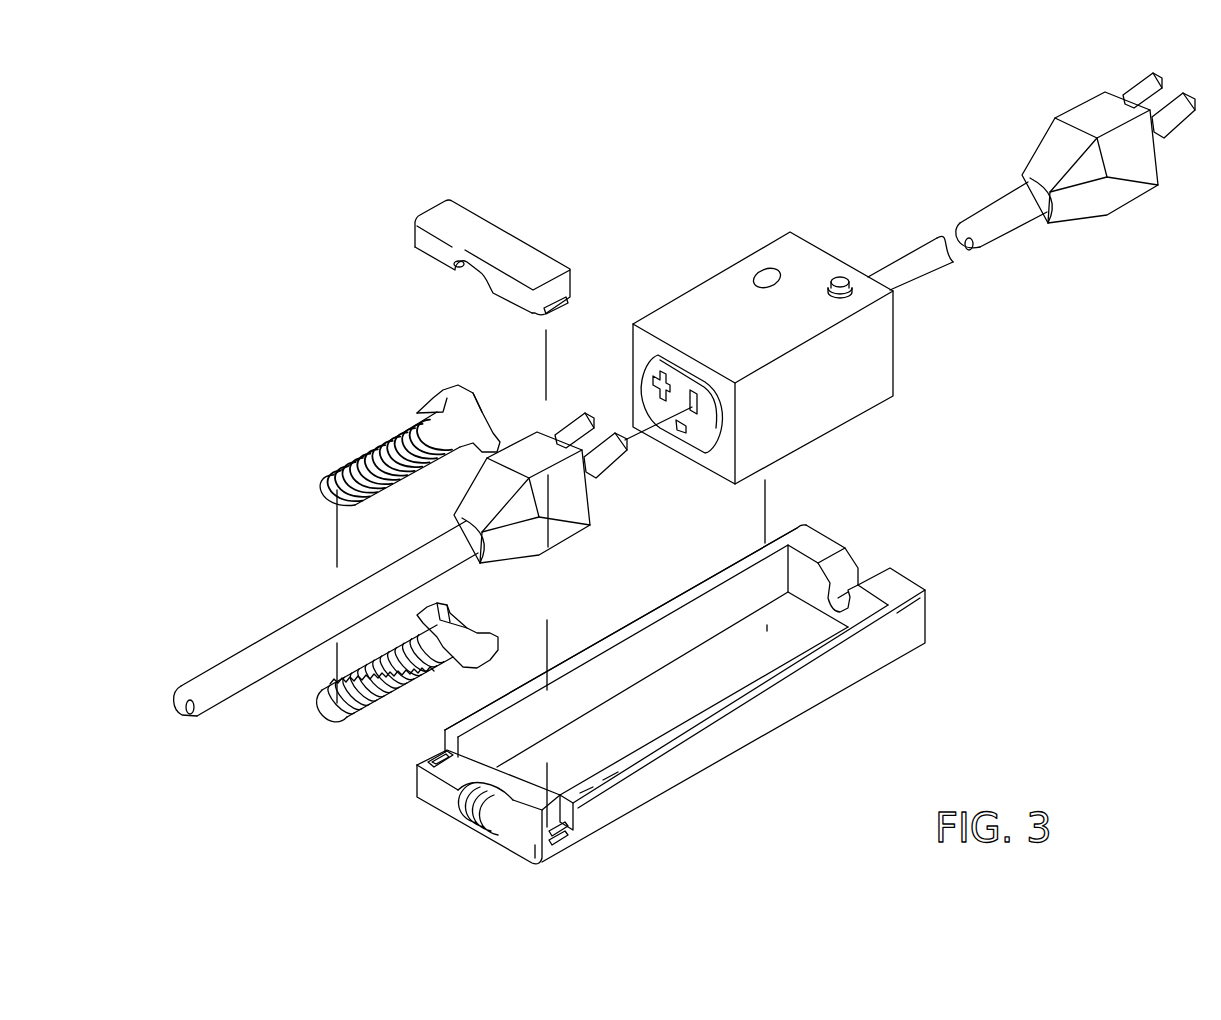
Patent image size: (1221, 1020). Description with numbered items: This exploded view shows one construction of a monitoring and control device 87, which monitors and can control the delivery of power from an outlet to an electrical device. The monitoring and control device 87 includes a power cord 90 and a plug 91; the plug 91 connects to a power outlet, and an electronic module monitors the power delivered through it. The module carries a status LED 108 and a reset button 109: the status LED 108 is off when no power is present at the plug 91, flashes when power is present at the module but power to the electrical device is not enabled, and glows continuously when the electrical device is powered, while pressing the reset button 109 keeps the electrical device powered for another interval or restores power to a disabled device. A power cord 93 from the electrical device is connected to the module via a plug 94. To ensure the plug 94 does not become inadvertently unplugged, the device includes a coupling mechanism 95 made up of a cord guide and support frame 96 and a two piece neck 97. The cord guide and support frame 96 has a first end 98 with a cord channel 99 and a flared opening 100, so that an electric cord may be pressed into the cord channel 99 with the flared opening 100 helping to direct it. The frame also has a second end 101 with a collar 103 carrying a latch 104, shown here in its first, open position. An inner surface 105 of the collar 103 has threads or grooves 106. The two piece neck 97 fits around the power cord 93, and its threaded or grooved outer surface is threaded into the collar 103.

The monitoring and control device 87 is at (784, 190).
The power cord 90 is at (990, 245).
The plug 91 is at (1140, 190).
The power cord 93 is at (212, 677).
The plug 94 is at (583, 518).
The coupling mechanism 95 is at (892, 701).
The cord guide and support frame 96 is at (790, 707).
The two piece neck 97 is at (365, 458).
The first end 98 is at (822, 542).
The cord channel 99 is at (840, 598).
The flared opening 100 is at (845, 560).
The second end 101 is at (498, 837).
The collar 103 is at (443, 777).
The latch 104 is at (487, 233).
The inner surface 105 is at (468, 817).
The threads or grooves 106 is at (463, 802).
The status LED 108 is at (760, 270).
The reset button 109 is at (842, 276).